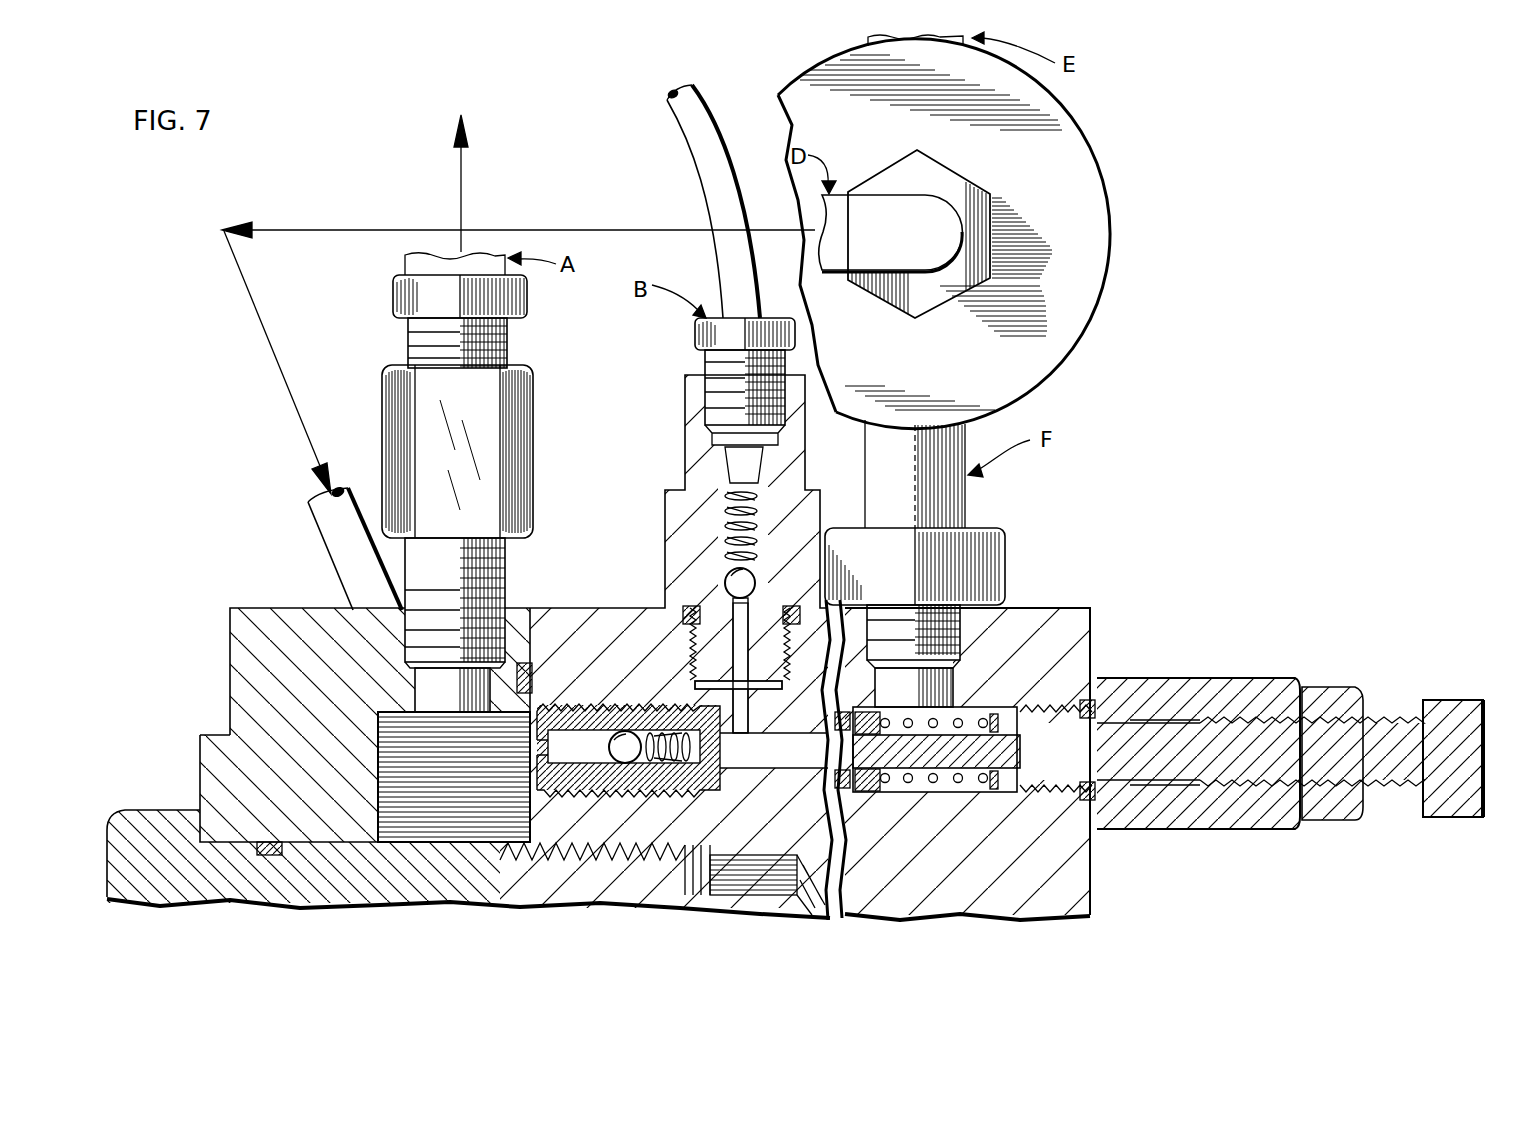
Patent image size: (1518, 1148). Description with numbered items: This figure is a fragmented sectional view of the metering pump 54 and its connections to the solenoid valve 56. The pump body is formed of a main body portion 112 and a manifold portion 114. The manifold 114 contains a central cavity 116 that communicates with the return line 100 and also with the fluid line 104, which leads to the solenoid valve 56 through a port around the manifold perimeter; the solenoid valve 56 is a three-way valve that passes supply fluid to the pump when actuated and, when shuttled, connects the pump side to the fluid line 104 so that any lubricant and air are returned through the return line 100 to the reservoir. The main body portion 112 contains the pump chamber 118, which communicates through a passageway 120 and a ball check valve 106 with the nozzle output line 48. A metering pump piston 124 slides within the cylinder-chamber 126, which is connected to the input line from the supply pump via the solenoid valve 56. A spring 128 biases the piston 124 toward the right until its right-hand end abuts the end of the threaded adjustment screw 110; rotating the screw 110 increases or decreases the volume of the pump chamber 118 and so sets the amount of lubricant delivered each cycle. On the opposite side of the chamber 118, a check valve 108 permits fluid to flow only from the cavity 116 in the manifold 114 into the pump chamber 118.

The nozzle output line 48 is at (700, 137).
The metering pump 54 is at (1088, 592).
The solenoid valve 56 is at (1078, 160).
The return line 100 is at (405, 263).
The fluid line 104 is at (328, 522).
The ball check valve 106 is at (735, 582).
The check valve 108 is at (625, 738).
The threaded adjustment screw 110 is at (1460, 700).
The main body portion 112 is at (568, 608).
The manifold portion 114 is at (265, 620).
The central cavity 116 is at (450, 810).
The pump chamber 118 is at (745, 748).
The passageway 120 is at (700, 700).
The metering pump piston 124 is at (900, 760).
The cylinder-chamber 126 is at (975, 720).
The spring 128 is at (965, 780).